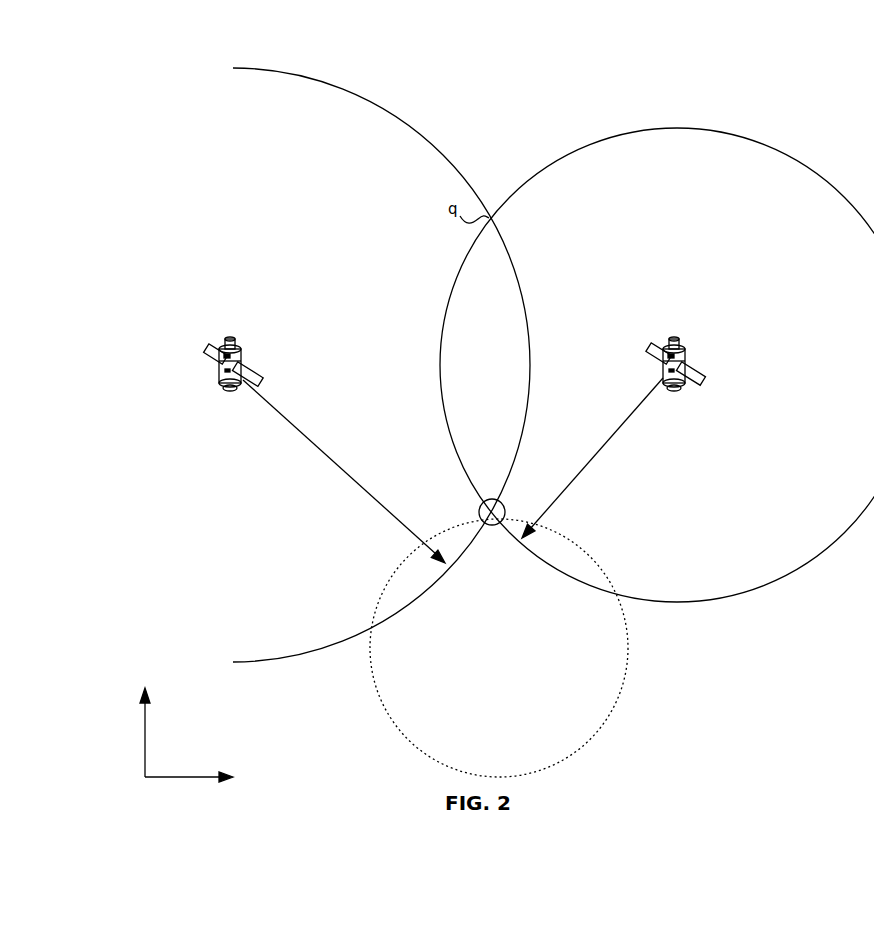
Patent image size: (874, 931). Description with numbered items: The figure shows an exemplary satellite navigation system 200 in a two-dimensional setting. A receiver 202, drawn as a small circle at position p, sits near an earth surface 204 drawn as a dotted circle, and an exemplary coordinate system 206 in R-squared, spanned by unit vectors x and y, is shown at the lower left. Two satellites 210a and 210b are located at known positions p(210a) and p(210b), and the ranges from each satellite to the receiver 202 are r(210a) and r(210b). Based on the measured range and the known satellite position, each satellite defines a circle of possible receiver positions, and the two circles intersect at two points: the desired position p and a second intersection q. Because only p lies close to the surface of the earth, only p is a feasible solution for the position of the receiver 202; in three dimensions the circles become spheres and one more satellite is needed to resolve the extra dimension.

The satellite navigation system 200 is at (30, 37).
The receiver 202 is at (480, 508).
The Earth surface 204 is at (376, 678).
The coordinate system 206 is at (150, 778).
The satellite 210a is at (222, 371).
The satellite 210b is at (686, 352).